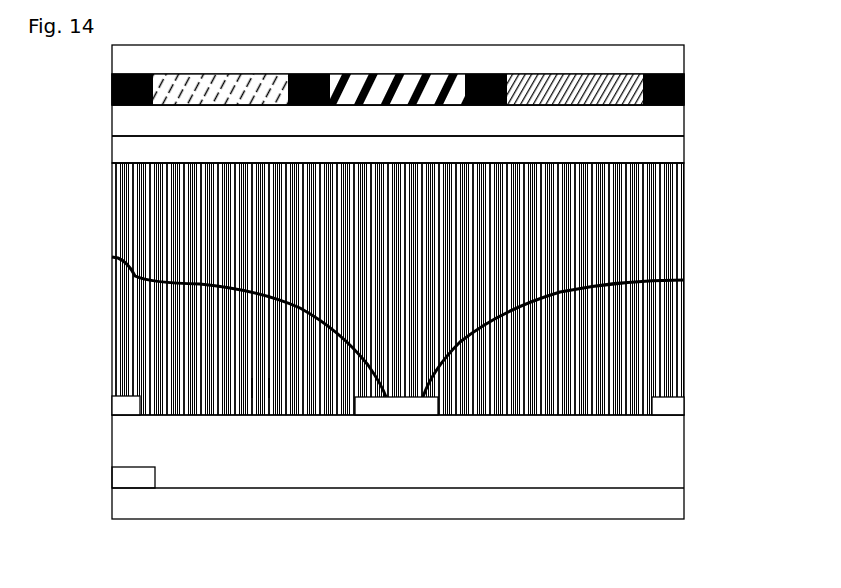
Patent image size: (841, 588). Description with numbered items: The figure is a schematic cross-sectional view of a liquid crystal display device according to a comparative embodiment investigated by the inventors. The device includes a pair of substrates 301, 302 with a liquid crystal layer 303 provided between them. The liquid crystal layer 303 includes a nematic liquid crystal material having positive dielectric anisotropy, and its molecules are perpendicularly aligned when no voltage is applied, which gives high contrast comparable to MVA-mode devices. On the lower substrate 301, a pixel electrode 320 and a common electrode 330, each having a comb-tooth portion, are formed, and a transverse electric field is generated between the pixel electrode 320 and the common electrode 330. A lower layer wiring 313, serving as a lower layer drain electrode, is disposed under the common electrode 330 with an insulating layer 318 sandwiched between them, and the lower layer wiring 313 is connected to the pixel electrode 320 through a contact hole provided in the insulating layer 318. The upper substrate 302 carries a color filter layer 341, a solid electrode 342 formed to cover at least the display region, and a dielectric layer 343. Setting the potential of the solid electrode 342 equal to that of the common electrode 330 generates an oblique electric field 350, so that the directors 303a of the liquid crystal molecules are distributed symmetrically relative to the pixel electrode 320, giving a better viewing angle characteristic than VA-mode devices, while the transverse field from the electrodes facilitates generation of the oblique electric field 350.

The substrate 302 is at (470, 107).
The color filter layer 341 is at (688, 91).
The solid electrode 342 is at (688, 122).
The dielectric layer 343 is at (438, 152).
The liquid crystal layer 303 is at (690, 167).
The directors of the liquid crystal molecules 303a is at (257, 385).
The oblique electric field 350 is at (112, 257).
The common electrode 330 is at (112, 404).
The pixel electrode 320 is at (390, 410).
The substrate 301 is at (392, 485).
The insulating layer 318 is at (115, 448).
The lower layer wiring 313 is at (132, 480).